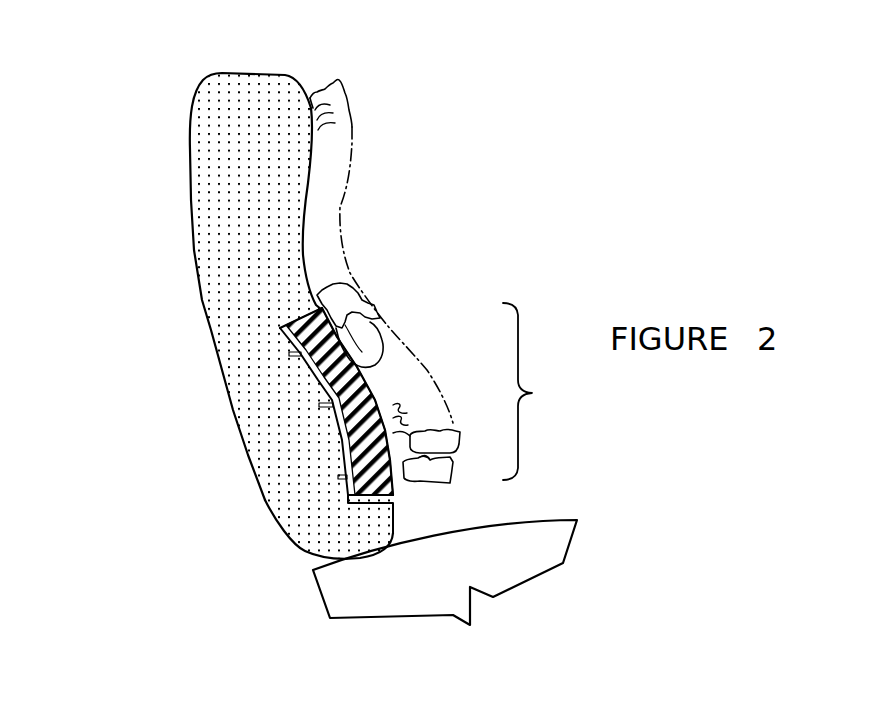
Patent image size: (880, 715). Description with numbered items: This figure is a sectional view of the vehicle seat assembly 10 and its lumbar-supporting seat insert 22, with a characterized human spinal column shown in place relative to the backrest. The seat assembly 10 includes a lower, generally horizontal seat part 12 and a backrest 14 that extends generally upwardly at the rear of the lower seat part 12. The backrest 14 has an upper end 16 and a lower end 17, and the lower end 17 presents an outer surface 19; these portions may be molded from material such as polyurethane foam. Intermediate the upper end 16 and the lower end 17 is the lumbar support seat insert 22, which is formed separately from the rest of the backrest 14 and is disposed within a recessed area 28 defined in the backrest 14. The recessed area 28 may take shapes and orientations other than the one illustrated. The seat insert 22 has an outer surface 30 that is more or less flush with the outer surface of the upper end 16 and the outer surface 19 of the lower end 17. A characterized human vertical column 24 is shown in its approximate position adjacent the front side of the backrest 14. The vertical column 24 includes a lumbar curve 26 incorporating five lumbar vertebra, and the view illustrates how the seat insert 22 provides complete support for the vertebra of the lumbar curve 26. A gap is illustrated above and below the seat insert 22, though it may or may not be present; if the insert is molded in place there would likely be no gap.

The vehicle seat assembly 10 is at (152, 276).
The lower seat part 12 is at (530, 567).
The backrest 14 is at (222, 357).
The upper end 16 is at (264, 90).
The lower end 17 is at (327, 525).
The outer surface 19 is at (399, 518).
The lumbar support seat insert 22 is at (344, 430).
The characterized human vertical column 24 is at (383, 277).
The lumbar curve 26 is at (442, 281).
The recessed area 28 is at (320, 298).
The outer surface 30 is at (367, 364).